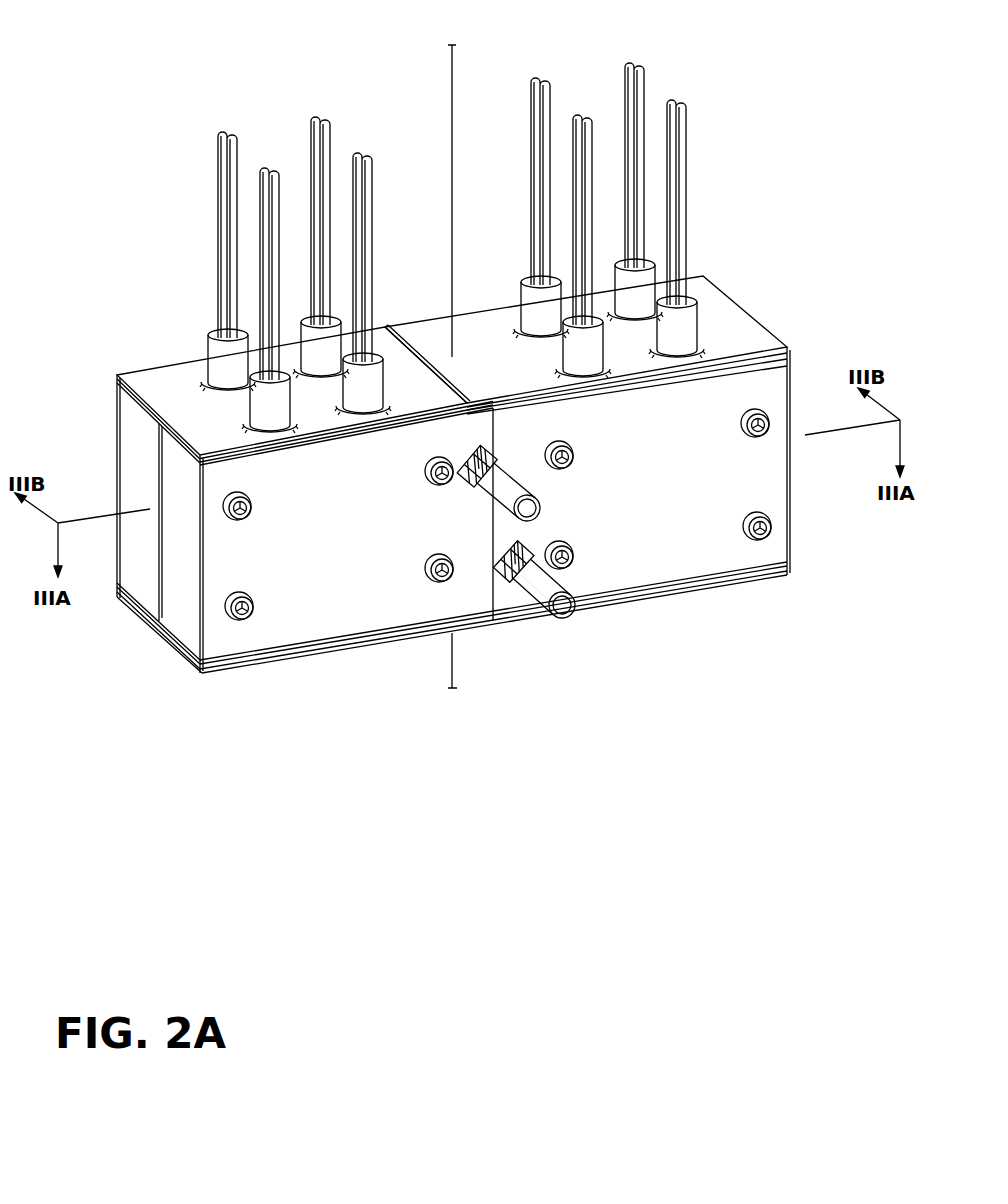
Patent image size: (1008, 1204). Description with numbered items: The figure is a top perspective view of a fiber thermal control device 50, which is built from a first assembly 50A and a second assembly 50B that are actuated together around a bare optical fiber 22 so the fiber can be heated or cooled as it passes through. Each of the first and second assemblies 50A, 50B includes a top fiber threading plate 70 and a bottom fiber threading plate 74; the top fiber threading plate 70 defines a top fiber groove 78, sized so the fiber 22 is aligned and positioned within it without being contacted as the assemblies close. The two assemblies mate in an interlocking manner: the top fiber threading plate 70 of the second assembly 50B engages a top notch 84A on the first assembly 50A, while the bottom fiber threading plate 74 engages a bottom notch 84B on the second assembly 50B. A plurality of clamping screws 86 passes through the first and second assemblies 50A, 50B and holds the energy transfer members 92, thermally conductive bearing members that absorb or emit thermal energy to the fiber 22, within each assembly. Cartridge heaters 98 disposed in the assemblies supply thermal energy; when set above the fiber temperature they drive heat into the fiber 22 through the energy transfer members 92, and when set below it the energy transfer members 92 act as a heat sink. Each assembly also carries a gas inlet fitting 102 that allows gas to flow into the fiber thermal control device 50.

The fiber thermal control device 50 is at (141, 144).
The first assembly 50A is at (637, 615).
The second assembly 50B is at (368, 662).
The bare optical fiber 22 is at (455, 98).
The top fiber threading plate 70 is at (167, 383).
The bottom fiber threading plate 74 is at (260, 660).
The top fiber groove 78 is at (437, 358).
The clamping screws 86 is at (233, 613).
The energy transfer members 92 is at (142, 568).
The cartridge heaters 98 is at (217, 353).
The top notch 84A is at (527, 402).
The bottom notch 84B is at (481, 635).
The gas inlet fitting 102 is at (543, 588).